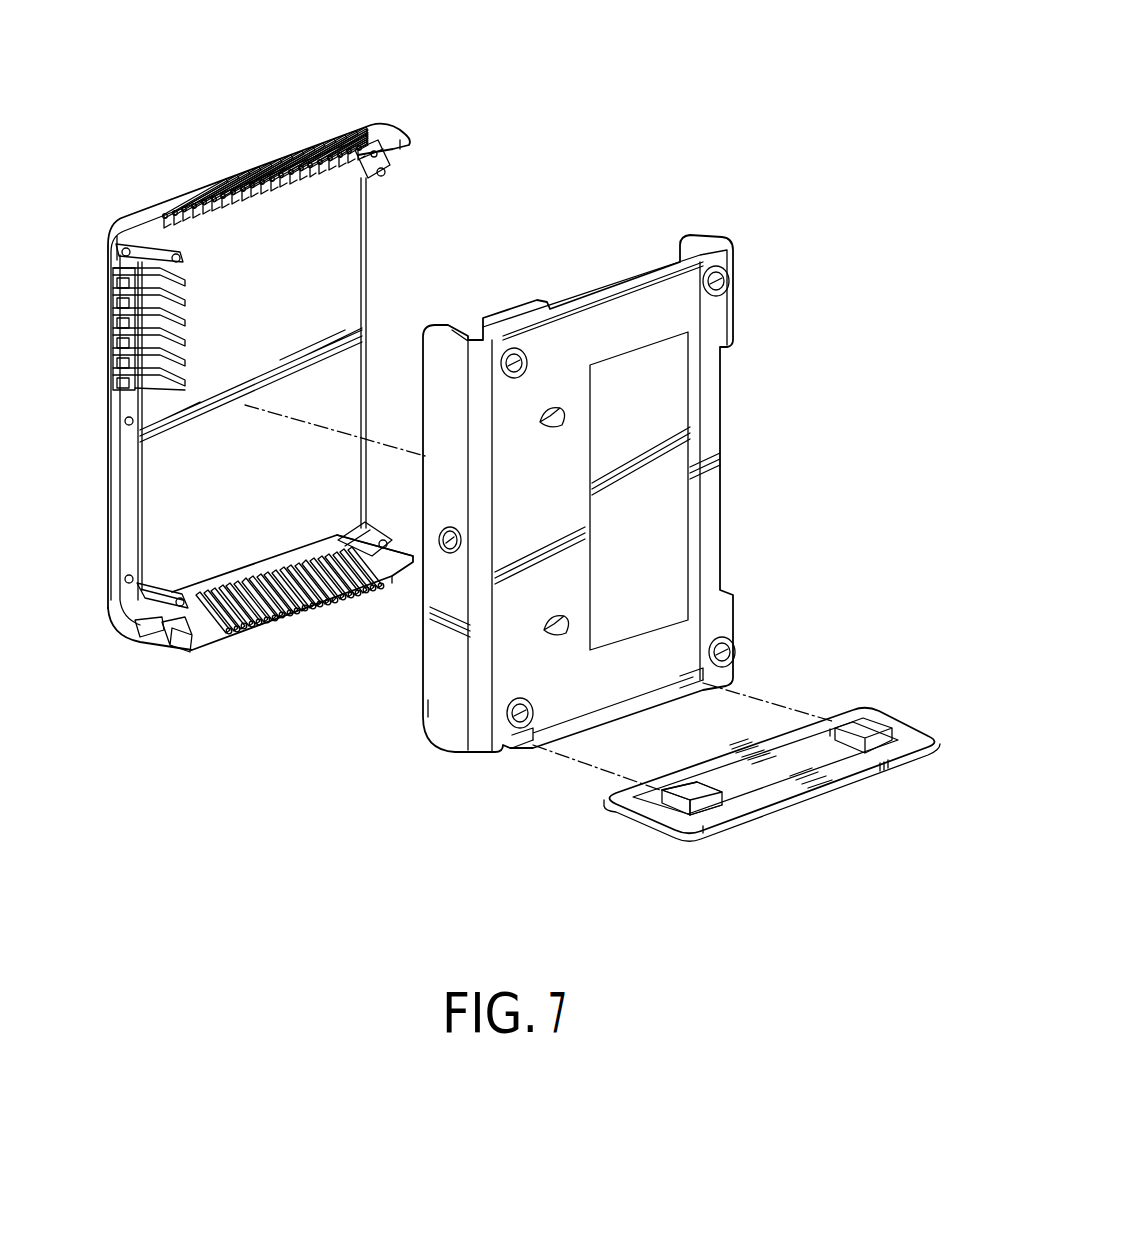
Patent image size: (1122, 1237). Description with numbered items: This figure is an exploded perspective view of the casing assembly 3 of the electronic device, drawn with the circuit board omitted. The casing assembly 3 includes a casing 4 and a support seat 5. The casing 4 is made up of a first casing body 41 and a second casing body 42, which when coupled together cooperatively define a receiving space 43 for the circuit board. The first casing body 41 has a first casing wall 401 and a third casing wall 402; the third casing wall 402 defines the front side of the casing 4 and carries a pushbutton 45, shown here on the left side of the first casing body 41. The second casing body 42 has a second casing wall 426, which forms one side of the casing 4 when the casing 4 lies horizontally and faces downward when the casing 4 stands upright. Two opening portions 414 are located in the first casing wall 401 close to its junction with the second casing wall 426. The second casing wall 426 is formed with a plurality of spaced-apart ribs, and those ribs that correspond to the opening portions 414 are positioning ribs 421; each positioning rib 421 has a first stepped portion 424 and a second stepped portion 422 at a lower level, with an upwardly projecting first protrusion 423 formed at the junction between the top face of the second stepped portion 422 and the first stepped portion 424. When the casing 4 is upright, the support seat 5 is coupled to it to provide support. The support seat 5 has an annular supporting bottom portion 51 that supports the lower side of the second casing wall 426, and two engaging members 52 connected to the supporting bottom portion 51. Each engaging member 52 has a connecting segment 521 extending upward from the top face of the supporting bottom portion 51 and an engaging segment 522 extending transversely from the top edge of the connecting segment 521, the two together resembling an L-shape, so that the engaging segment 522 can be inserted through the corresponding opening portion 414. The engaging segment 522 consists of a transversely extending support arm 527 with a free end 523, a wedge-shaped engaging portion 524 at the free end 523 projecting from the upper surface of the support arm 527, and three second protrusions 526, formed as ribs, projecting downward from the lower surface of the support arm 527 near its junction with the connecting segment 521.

The casing assembly 3 is at (785, 176).
The casing 4 is at (262, 124).
The first casing body 41 is at (735, 325).
The second casing body 42 is at (347, 231).
The receiving space 43 is at (605, 274).
The pushbutton 45 is at (445, 553).
The first casing wall 401 is at (707, 605).
The third casing wall 402 is at (453, 725).
The opening portions 414 is at (516, 750).
The positioning ribs 421 is at (356, 545).
The second stepped portion 422 is at (207, 645).
The first protrusion 423 is at (168, 622).
The first stepped portion 424 is at (167, 618).
The second casing wall 426 is at (400, 568).
The support seat 5 is at (864, 690).
The supporting bottom portion 51 is at (820, 790).
The engaging members 52 is at (712, 783).
The connecting segment 521 is at (710, 803).
The engaging segment 522 is at (688, 808).
The free end 523 is at (678, 795).
The engaging portion 524 is at (677, 785).
The second protrusions 526 is at (693, 808).
The support arm 527 is at (690, 790).